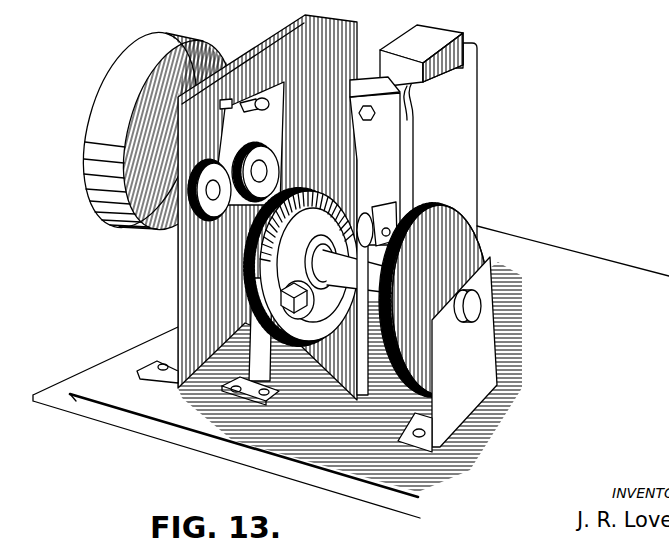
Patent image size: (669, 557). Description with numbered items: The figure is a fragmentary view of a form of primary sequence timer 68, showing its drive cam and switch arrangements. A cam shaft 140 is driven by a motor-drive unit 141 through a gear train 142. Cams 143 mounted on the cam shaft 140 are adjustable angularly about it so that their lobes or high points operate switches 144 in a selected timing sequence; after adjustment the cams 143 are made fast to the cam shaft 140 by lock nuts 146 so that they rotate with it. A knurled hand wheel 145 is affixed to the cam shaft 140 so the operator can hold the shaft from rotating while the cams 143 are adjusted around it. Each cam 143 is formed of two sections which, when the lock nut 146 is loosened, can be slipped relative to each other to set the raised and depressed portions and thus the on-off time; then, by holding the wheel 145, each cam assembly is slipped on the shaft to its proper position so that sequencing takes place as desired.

The primary sequence timer 68 is at (117, 418).
The cam shaft 140 is at (366, 272).
The motor-drive unit 141 is at (110, 90).
The gear train 142 is at (205, 222).
The cams 143 is at (318, 199).
The switches 144 is at (380, 190).
The hand wheel 145 is at (468, 232).
The lock nuts 146 is at (299, 318).